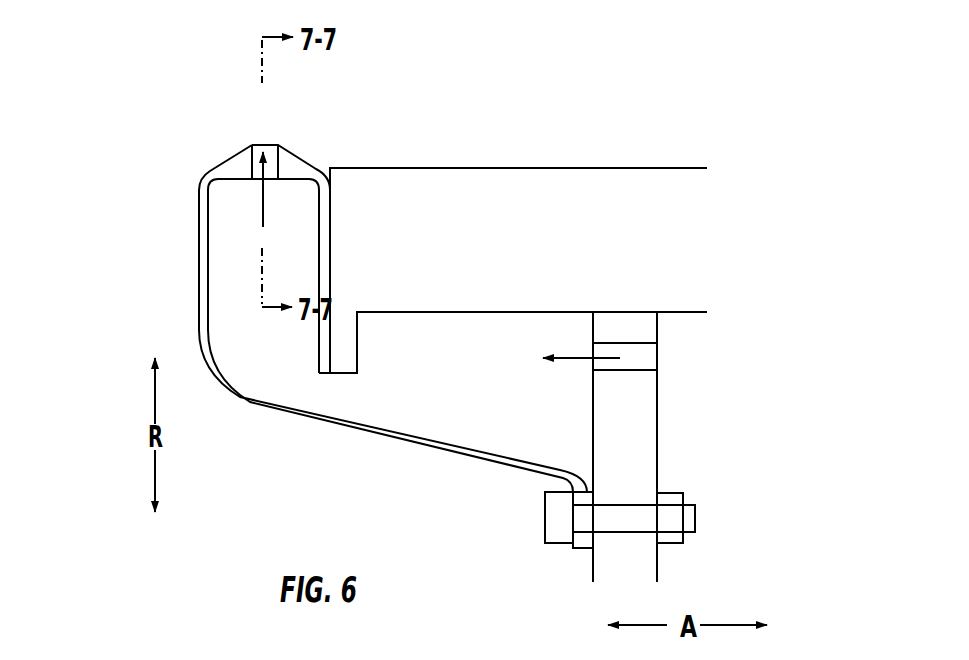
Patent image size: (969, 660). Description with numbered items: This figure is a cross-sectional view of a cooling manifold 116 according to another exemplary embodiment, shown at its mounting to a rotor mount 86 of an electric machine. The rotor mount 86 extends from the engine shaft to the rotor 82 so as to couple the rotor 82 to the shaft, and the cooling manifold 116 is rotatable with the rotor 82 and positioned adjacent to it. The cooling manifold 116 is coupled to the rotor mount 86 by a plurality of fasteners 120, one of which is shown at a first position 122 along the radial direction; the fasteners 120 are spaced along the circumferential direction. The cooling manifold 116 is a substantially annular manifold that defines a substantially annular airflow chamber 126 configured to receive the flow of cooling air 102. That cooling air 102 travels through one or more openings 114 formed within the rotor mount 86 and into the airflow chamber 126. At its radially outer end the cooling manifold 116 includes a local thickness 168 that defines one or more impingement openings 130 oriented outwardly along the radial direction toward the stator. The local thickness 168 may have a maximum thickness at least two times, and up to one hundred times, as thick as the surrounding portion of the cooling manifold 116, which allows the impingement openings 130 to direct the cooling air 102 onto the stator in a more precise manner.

The rotor 82 is at (566, 252).
The rotor mount 86 is at (643, 425).
The flow of cooling air 102 is at (265, 195).
The openings 114 is at (653, 357).
The cooling manifold 116 is at (198, 238).
The fasteners 120 is at (553, 517).
The first position 122 is at (523, 543).
The substantially annular airflow chamber 126 is at (230, 212).
The impingement openings 130 is at (257, 134).
The local thickness 168 is at (290, 153).